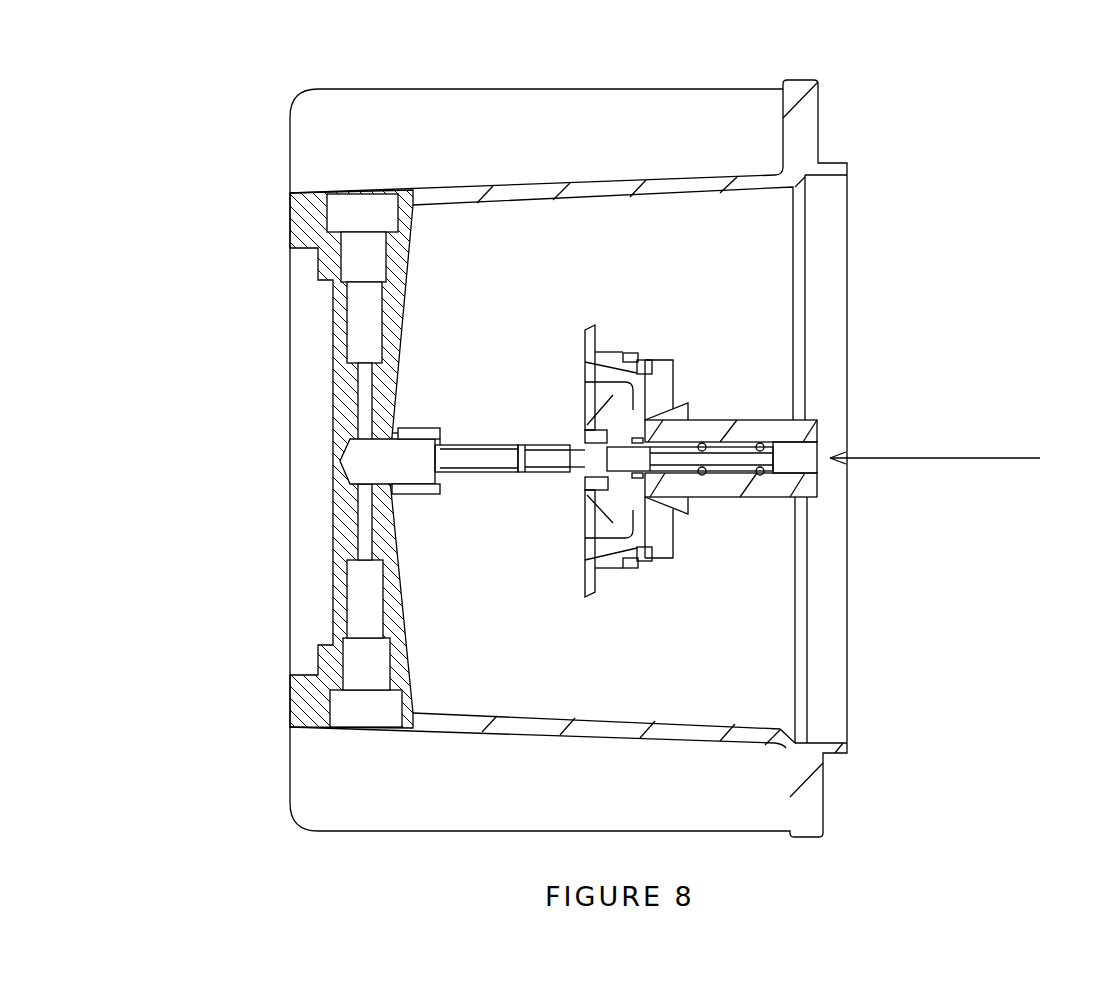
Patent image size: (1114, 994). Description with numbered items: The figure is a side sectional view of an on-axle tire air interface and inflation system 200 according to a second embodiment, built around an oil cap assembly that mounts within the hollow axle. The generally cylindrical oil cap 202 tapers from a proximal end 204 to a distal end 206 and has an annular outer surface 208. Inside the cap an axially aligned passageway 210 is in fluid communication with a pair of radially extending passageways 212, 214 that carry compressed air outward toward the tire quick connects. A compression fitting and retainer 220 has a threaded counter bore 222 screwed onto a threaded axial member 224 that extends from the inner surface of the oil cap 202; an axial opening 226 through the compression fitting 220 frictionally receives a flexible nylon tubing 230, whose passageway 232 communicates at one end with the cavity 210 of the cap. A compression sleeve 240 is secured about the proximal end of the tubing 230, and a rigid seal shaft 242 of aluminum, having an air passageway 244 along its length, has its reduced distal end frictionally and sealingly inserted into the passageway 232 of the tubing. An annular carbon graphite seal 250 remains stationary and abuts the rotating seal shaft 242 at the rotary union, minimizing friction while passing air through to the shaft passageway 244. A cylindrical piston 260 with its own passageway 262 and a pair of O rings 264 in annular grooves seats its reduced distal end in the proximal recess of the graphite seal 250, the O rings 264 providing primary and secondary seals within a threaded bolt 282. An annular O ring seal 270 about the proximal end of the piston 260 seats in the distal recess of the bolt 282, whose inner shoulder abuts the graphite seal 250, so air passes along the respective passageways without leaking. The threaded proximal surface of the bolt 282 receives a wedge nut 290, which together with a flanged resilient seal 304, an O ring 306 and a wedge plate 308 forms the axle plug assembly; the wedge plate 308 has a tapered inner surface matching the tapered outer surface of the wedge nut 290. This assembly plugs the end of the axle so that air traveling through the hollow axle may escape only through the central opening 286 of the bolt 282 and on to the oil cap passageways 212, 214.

The on-axle tire air interface and inflation system 200 is at (922, 265).
The oil cap 202 is at (622, 178).
The proximal end 204 is at (808, 78).
The distal end 206 is at (302, 123).
The annular outer surface 208 is at (492, 187).
The axially aligned passageway 210 is at (370, 465).
The radially extending passageway 212 is at (350, 265).
The radially extending passageway 214 is at (362, 672).
The compression fitting and retainer 220 is at (428, 428).
The threaded counter bore 222 is at (402, 447).
The threaded axial member 224 is at (414, 494).
The axial opening 226 is at (452, 440).
The flexible nylon tubing 230 is at (470, 473).
The passageway 232 is at (481, 447).
The compression sleeve 240 is at (523, 471).
The rigid seal shaft 242 is at (572, 474).
The air passageway 244 is at (582, 444).
The annular carbon graphite seal 250 is at (603, 429).
The cylindrical piston 260 is at (752, 443).
The passageway 262 is at (676, 466).
The O rings 264 is at (760, 476).
The annular O ring seal 270 is at (585, 437).
The threaded bolt 282 is at (733, 420).
The opening 286 is at (800, 470).
The wedge nut 290 is at (690, 403).
The flanged resilient seal 304 is at (596, 328).
The O ring 306 is at (626, 353).
The wedge plate 308 is at (663, 360).